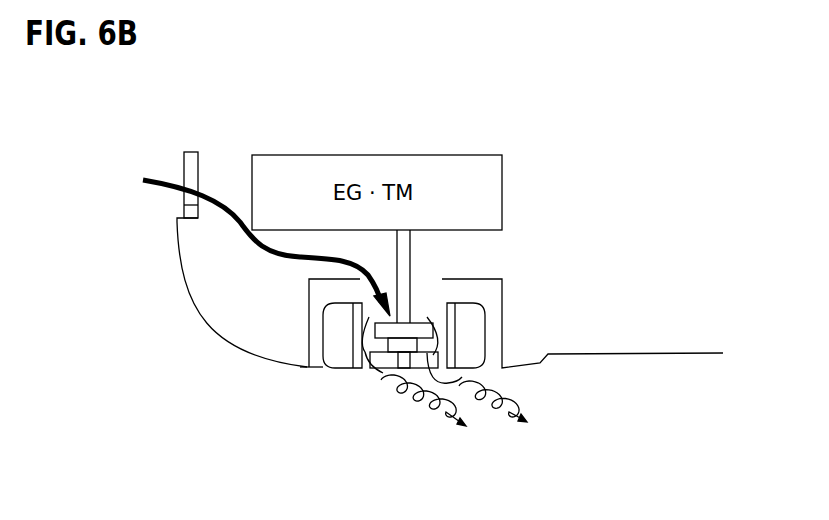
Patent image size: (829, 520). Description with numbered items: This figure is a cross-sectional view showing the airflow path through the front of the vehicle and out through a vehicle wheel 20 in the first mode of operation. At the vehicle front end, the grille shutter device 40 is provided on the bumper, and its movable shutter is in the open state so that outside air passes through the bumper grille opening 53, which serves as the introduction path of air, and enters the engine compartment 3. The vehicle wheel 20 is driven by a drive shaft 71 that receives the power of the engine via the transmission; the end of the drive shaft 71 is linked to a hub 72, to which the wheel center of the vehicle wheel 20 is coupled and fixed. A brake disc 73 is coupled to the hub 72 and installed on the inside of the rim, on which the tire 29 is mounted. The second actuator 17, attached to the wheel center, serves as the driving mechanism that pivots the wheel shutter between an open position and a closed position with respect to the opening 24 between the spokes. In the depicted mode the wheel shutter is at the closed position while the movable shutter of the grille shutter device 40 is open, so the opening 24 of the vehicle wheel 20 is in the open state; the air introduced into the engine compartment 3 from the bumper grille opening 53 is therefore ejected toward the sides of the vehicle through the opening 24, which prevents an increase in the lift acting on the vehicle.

The grille shutter device 40 is at (182, 168).
The bumper grille opening 53 is at (191, 205).
The engine compartment 3 is at (292, 242).
The brake disc 73 is at (390, 318).
The drive shaft 71 is at (413, 251).
The hub 72 is at (410, 340).
The opening 24 is at (368, 368).
The tire 29 is at (333, 358).
The vehicle wheel 20 is at (361, 368).
The second actuator 17 is at (397, 381).